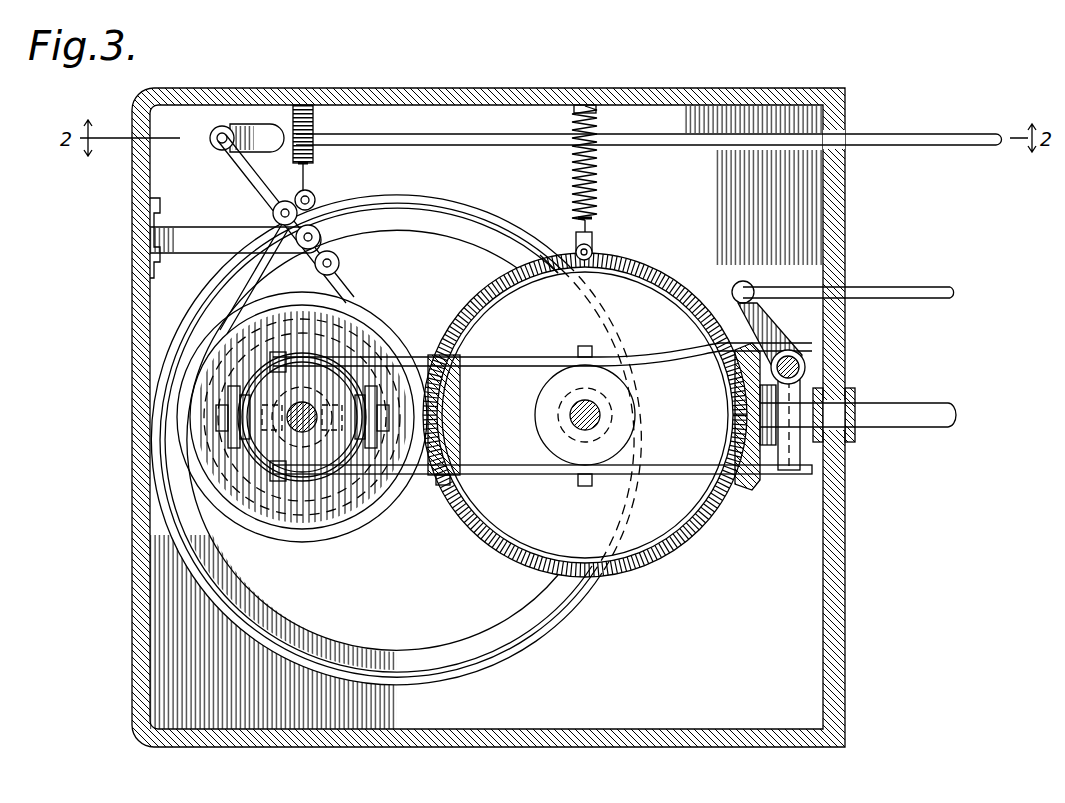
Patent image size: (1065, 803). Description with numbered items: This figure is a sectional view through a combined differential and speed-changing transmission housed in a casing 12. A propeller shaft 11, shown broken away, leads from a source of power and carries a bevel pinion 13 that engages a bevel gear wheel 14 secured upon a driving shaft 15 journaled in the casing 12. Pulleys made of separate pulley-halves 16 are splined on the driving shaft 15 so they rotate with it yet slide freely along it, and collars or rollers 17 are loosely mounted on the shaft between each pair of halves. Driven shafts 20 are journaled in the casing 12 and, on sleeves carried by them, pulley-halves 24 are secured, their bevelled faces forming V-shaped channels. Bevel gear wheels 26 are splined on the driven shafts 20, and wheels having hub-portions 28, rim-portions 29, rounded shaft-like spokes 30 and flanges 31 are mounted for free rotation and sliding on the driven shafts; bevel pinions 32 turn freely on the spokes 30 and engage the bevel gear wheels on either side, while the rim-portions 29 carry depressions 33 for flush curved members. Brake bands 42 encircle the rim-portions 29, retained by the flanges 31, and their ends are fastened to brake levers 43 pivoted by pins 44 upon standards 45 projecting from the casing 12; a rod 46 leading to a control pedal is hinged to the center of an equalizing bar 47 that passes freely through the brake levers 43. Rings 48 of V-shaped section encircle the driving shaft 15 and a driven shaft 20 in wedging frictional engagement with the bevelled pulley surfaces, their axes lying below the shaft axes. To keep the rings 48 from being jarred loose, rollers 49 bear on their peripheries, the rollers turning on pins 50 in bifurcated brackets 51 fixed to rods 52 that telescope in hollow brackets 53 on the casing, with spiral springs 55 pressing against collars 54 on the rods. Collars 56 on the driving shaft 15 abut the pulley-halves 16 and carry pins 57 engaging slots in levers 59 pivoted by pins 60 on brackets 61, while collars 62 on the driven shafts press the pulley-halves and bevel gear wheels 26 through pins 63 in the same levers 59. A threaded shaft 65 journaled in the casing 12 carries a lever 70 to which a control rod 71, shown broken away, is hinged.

The propeller shaft 11 is at (893, 428).
The casing 12 is at (578, 90).
The bevel pinion 13 is at (760, 478).
The bevel gear wheel 14 is at (716, 536).
The driving shaft 15 is at (602, 420).
The pulley-halves 16 is at (690, 288).
The collars or rollers 17 is at (570, 415).
The driven shafts 20 is at (302, 419).
The pulley-halves 24 is at (356, 548).
The bevel gear wheels 26 is at (262, 473).
The hub-portions 28 is at (310, 402).
The rim-portions 29 is at (235, 505).
The spokes 30 is at (228, 398).
The flanges 31 is at (205, 540).
The bevel pinions 32 is at (216, 425).
The depressions 33 is at (320, 505).
The brake bands 42 is at (342, 277).
The brake levers 43 is at (252, 168).
The pins 44 is at (386, 206).
The standards 45 is at (236, 230).
The rod 46 is at (906, 134).
The equalizing bar 47 is at (214, 146).
The rings 48 is at (488, 206).
The rollers 49 is at (316, 200).
The pins 50 is at (594, 253).
The bifurcated brackets 51 is at (594, 243).
The rods 52 is at (308, 178).
The hollow brackets 53 is at (574, 118).
The collars 54 is at (310, 172).
The spiral springs 55 is at (314, 125).
The collars 56 is at (550, 396).
The pins 57 is at (585, 347).
The levers 59 is at (660, 354).
The pins 60 is at (440, 486).
The brackets 61 is at (462, 440).
The collars 62 is at (276, 346).
The pins 63 is at (318, 336).
The shaft 65 is at (808, 366).
The lever 70 is at (789, 310).
The control rod 71 is at (898, 290).